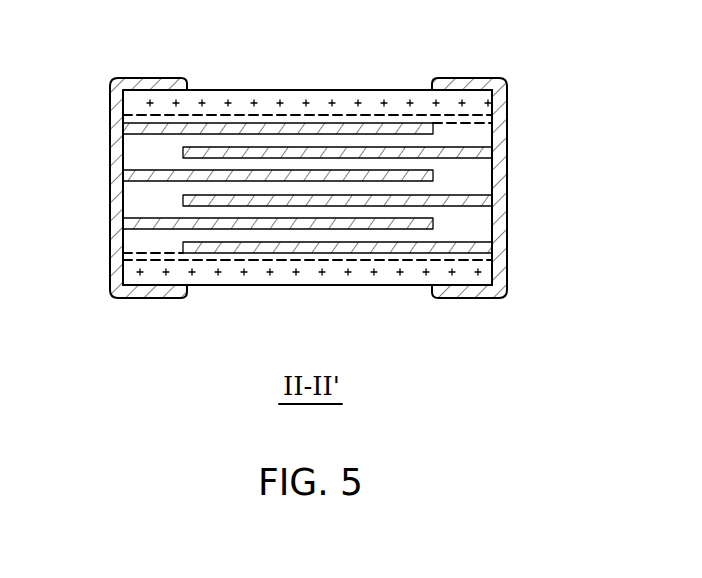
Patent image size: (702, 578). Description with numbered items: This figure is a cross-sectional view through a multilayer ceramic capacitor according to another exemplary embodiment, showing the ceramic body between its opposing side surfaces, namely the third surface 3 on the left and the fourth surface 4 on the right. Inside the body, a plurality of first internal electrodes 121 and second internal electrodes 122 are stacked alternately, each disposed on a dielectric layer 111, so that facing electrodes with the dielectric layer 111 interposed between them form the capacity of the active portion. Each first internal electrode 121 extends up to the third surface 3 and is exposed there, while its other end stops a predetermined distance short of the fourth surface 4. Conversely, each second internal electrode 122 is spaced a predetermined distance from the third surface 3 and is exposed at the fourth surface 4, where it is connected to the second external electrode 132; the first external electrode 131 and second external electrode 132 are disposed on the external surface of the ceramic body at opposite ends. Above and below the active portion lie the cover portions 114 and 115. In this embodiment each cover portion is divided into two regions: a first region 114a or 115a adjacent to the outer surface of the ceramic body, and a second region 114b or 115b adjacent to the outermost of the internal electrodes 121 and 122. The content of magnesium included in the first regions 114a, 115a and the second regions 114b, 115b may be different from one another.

The third surface 3 is at (100, 183).
The fourth surface 4 is at (518, 132).
The dielectric layer 111 is at (430, 188).
The cover portion 114 is at (307, 69).
The first region 114a is at (277, 101).
The second region 114b is at (337, 112).
The cover portion 115 is at (307, 310).
The first region 115a is at (274, 280).
The second region 115b is at (339, 266).
The first internal electrode 121 is at (143, 177).
The second internal electrode 122 is at (475, 202).
The first external electrode 131 is at (147, 79).
The second external electrode 132 is at (466, 82).